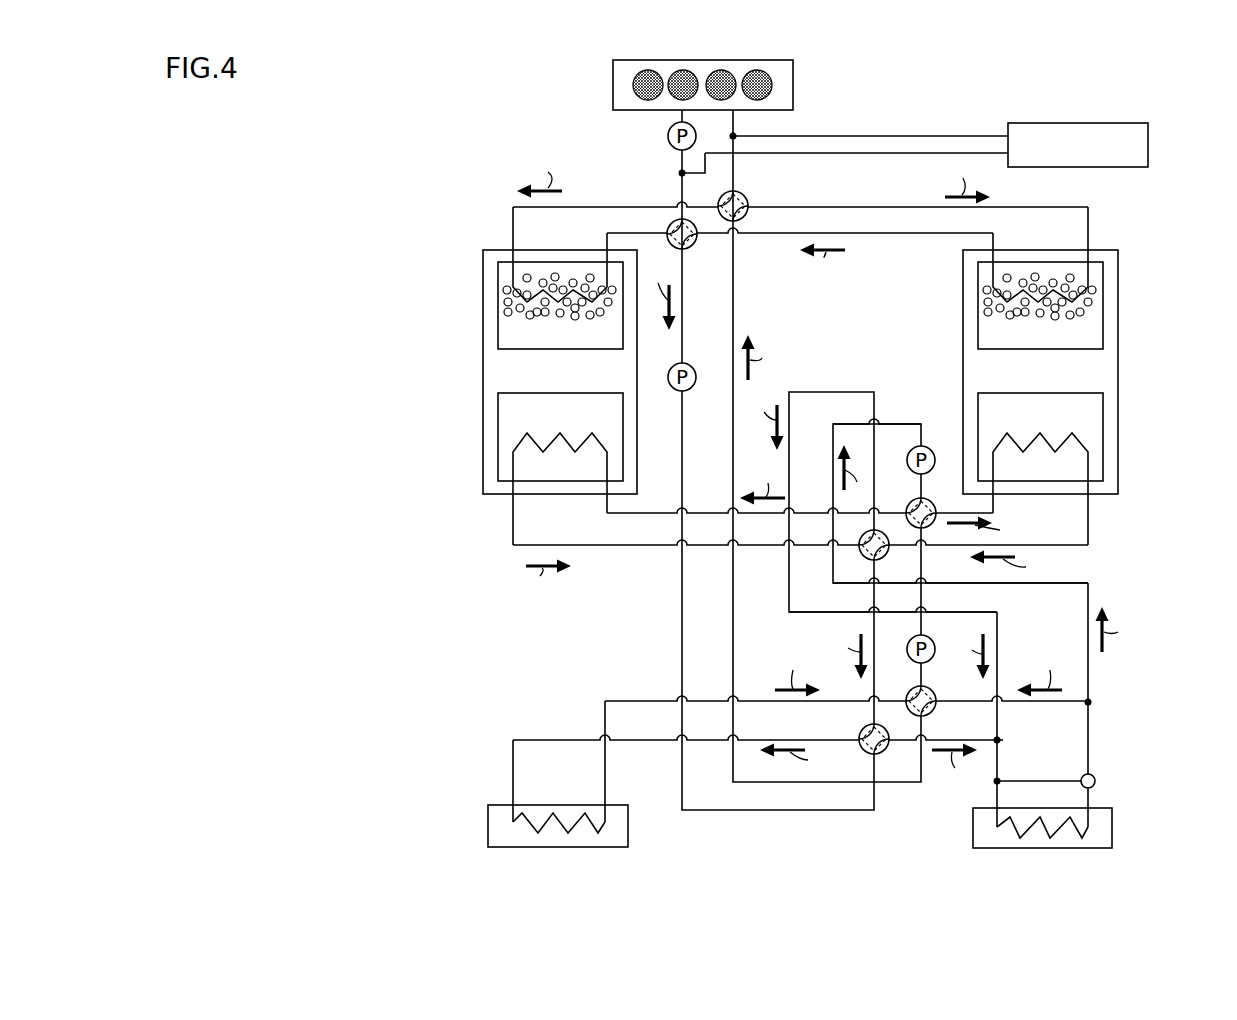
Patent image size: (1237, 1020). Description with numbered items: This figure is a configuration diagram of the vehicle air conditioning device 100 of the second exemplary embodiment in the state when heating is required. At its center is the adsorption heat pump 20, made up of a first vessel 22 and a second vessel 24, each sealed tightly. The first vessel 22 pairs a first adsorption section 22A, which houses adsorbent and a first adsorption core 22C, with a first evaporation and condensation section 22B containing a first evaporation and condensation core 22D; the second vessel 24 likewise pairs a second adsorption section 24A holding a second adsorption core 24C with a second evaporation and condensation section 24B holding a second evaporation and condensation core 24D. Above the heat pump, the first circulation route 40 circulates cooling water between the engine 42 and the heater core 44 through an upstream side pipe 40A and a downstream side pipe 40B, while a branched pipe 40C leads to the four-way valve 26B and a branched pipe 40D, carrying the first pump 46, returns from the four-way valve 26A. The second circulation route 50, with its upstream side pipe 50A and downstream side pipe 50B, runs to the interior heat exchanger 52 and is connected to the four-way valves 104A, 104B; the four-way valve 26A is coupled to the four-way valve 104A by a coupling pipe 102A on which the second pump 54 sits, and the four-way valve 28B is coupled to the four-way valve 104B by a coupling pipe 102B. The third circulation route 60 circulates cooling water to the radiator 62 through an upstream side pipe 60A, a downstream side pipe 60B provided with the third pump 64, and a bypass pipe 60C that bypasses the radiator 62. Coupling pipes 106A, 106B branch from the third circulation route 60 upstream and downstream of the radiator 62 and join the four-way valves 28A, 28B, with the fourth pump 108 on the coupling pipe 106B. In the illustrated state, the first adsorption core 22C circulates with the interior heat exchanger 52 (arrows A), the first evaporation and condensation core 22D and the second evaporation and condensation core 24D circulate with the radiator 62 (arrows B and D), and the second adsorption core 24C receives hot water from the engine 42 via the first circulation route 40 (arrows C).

The vehicle air conditioning device 100 is at (363, 207).
The adsorption heat pump 20 is at (432, 370).
The first vessel 22 is at (483, 480).
The first adsorption section 22A is at (498, 315).
The first evaporation and condensation section 22B is at (498, 432).
The first adsorption core 22C is at (548, 306).
The first evaporation and condensation core 22D is at (549, 440).
The second vessel 24 is at (1118, 377).
The second adsorption section 24A is at (1118, 315).
The second evaporation and condensation section 24B is at (1103, 437).
The second adsorption core 24C is at (1028, 306).
The second evaporation and condensation core 24D is at (1031, 440).
The four-way valve 26A is at (668, 233).
The four-way valve 26B is at (748, 204).
The four-way valve 28A is at (863, 556).
The four-way valve 28B is at (912, 503).
The first circulation route 40 is at (897, 121).
The upstream side pipe 40A is at (850, 136).
The downstream side pipe 40B is at (945, 153).
The branched pipe 40C is at (738, 165).
The branched pipe 40D is at (682, 168).
The engine 42 is at (613, 81).
The heater core 44 is at (1086, 123).
The first pump 46 is at (668, 136).
The second circulation route 50 is at (560, 726).
The upstream side pipe 50A is at (650, 741).
The downstream side pipe 50B is at (630, 701).
The interior heat exchanger 52 is at (628, 828).
The second pump 54 is at (692, 389).
The third circulation route 60 is at (1120, 708).
The upstream side pipe 60A is at (1000, 764).
The downstream side pipe 60B is at (1090, 748).
The bypass pipe 60C is at (1062, 780).
The radiator 62 is at (1112, 832).
The third pump 64 is at (931, 447).
The coupling pipe 102A is at (682, 610).
The coupling pipe 102B is at (733, 307).
The four-way valve 104A is at (860, 737).
The four-way valve 104B is at (937, 707).
The coupling pipe 106A is at (997, 746).
The coupling pipe 106B is at (1080, 700).
The fourth pump 108 is at (936, 638).